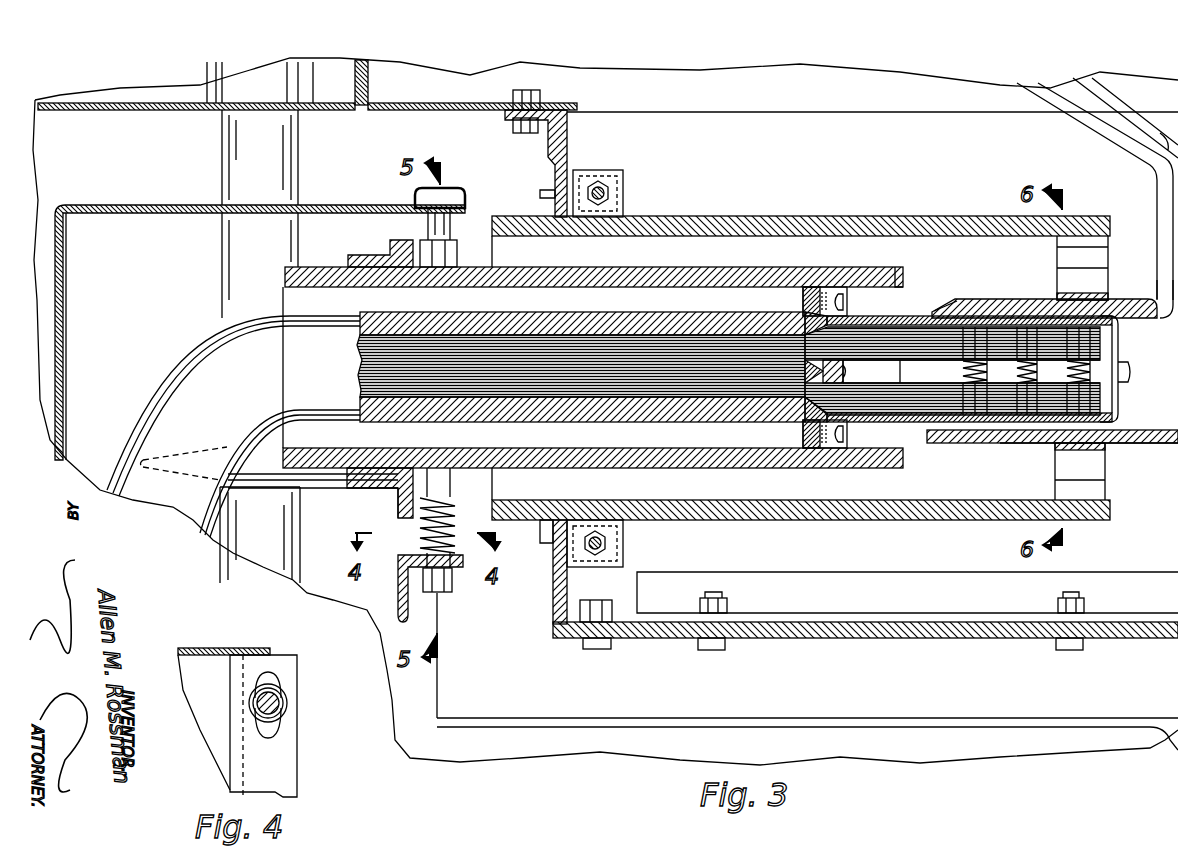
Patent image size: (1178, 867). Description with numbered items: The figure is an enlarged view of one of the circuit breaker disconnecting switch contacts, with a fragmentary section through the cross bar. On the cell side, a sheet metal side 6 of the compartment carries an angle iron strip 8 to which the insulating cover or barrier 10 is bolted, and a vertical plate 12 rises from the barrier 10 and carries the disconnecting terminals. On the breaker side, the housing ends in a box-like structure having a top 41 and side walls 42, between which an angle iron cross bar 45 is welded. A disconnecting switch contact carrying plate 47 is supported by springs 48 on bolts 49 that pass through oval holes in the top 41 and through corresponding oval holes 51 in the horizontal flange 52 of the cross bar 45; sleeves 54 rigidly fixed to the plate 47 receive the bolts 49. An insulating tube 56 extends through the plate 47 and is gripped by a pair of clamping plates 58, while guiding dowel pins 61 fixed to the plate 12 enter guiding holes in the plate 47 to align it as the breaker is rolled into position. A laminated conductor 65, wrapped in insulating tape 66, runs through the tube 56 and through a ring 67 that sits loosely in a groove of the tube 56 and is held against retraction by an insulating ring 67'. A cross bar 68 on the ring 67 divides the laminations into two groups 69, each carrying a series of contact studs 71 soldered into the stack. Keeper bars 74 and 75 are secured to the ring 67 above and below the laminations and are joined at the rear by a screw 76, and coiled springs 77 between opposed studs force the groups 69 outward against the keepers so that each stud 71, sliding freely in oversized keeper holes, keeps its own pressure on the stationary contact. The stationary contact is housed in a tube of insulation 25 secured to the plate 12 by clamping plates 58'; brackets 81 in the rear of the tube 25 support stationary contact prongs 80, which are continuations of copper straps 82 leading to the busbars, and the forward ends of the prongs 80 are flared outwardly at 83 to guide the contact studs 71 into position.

In FIG. 3, the sheet metal side 6 is at (778, 92).
In FIG. 3, the angle iron strip 8 is at (1142, 562).
In FIG. 3, the insulating cover or barrier 10 is at (1160, 640).
In FIG. 3, the vertical plate 12 is at (568, 135).
In FIG. 3, the tube of insulation 25 is at (785, 216).
In FIG. 3, the top 41 is at (118, 207).
In FIG. 4, the side wall 42 is at (240, 648).
In FIG. 3, the angle iron cross bar 45 is at (400, 605).
In FIG. 4, the angle iron cross bar 45 is at (232, 783).
In FIG. 3, the disconnecting switch contact carrying plate or carriage 47 is at (398, 515).
In FIG. 3, the spring 48 is at (422, 535).
In FIG. 3, the bolt 49 is at (433, 228).
In FIG. 4, the bolt 49 is at (287, 703).
In FIG. 4, the oval hole 51 is at (278, 680).
In FIG. 3, the horizontal flange 52 is at (460, 567).
In FIG. 4, the horizontal flange 52 is at (285, 768).
In FIG. 3, the sleeve 54 is at (458, 264).
In FIG. 3, the insulating tube 56 is at (668, 268).
In FIG. 3, the clamping plate 58 is at (377, 373).
In FIG. 3, the clamping plate 58' is at (606, 392).
In FIG. 3, the guiding dowel pin 61 is at (323, 483).
In FIG. 3, the laminated conductor 65 is at (452, 380).
In FIG. 3, the insulating tape wrapping 66 is at (605, 415).
In FIG. 3, the ring 67 is at (801, 367).
In FIG. 3, the insulating ring 67' is at (926, 265).
In FIG. 3, the cross bar 68 is at (845, 370).
In FIG. 3, the group of laminations 69 is at (1100, 338).
In FIG. 3, the contact stud 71 is at (1045, 433).
In FIG. 3, the keeper bar 74 is at (918, 322).
In FIG. 3, the keeper bar 75 is at (920, 423).
In FIG. 3, the screw 76 is at (1130, 375).
In FIG. 3, the coiled spring 77 is at (968, 370).
In FIG. 3, the stationary contact prong 80 is at (1012, 290).
In FIG. 3, the bracket 81 is at (1100, 262).
In FIG. 3, the copper strap 82 is at (1100, 140).
In FIG. 3, the outwardly flared end 83 is at (932, 305).